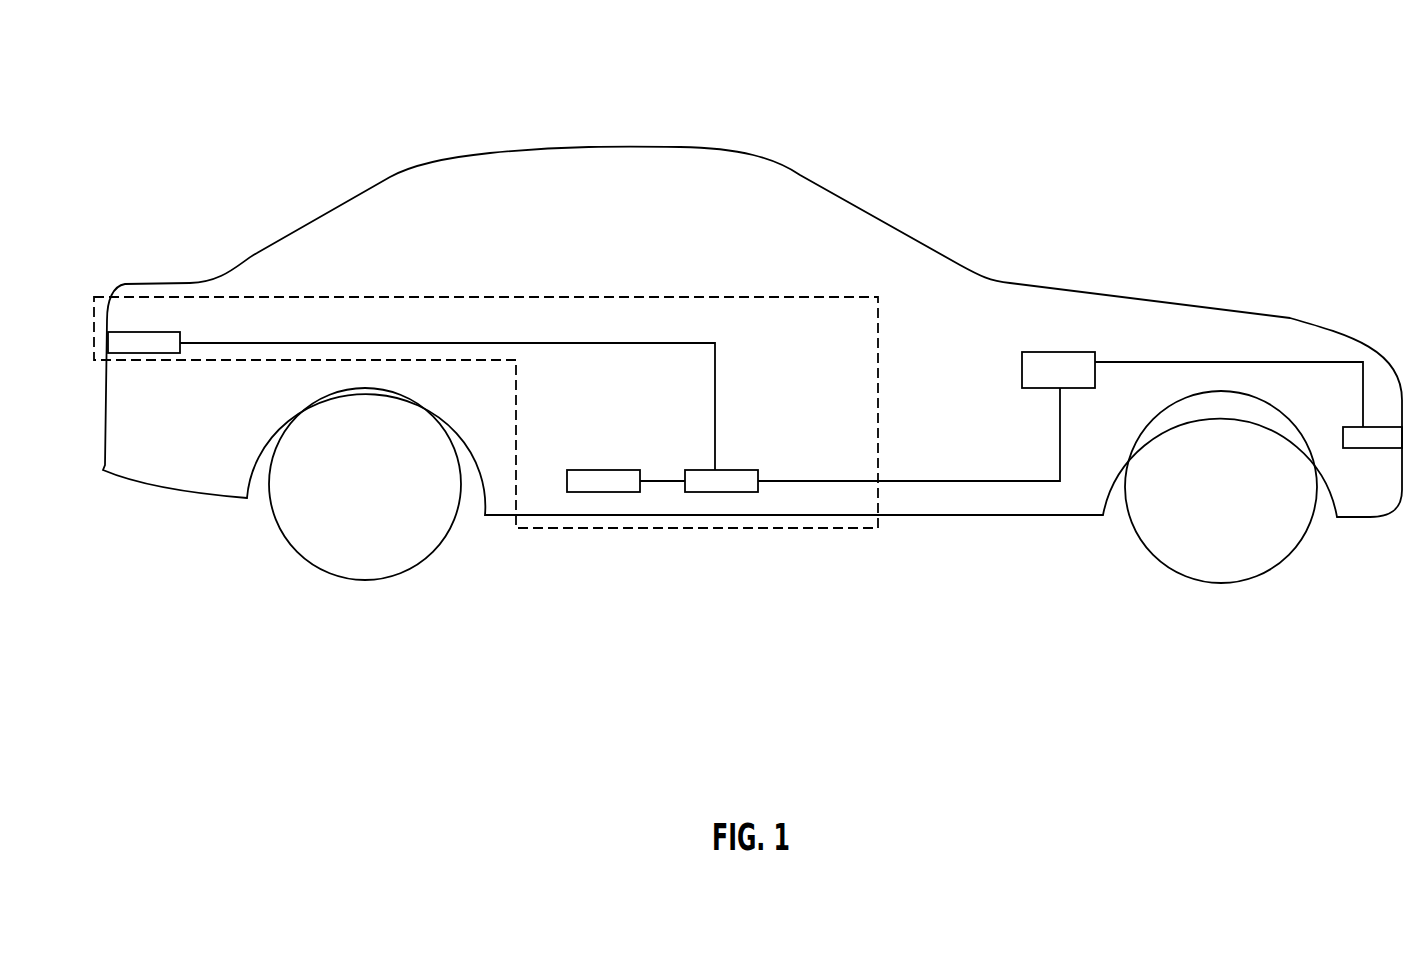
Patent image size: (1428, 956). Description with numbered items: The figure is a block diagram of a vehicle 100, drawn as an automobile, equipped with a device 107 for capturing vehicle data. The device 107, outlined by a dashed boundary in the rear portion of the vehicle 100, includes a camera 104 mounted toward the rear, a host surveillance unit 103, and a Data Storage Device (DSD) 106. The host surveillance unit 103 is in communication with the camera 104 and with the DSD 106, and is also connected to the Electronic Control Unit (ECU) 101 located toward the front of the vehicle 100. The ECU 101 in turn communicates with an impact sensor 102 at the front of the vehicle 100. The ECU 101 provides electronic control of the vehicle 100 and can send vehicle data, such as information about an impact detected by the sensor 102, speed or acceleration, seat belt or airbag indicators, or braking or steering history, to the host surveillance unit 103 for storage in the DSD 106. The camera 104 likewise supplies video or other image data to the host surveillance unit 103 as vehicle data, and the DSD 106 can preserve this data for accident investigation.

The vehicle 100 is at (678, 120).
The Electronic Control Unit (ECU) 101 is at (1060, 352).
The impact sensor 102 is at (1373, 448).
The host surveillance unit 103 is at (763, 472).
The camera 104 is at (181, 332).
The Data Storage Device (DSD) 106 is at (607, 465).
The device for capturing vehicle data 107 is at (503, 295).